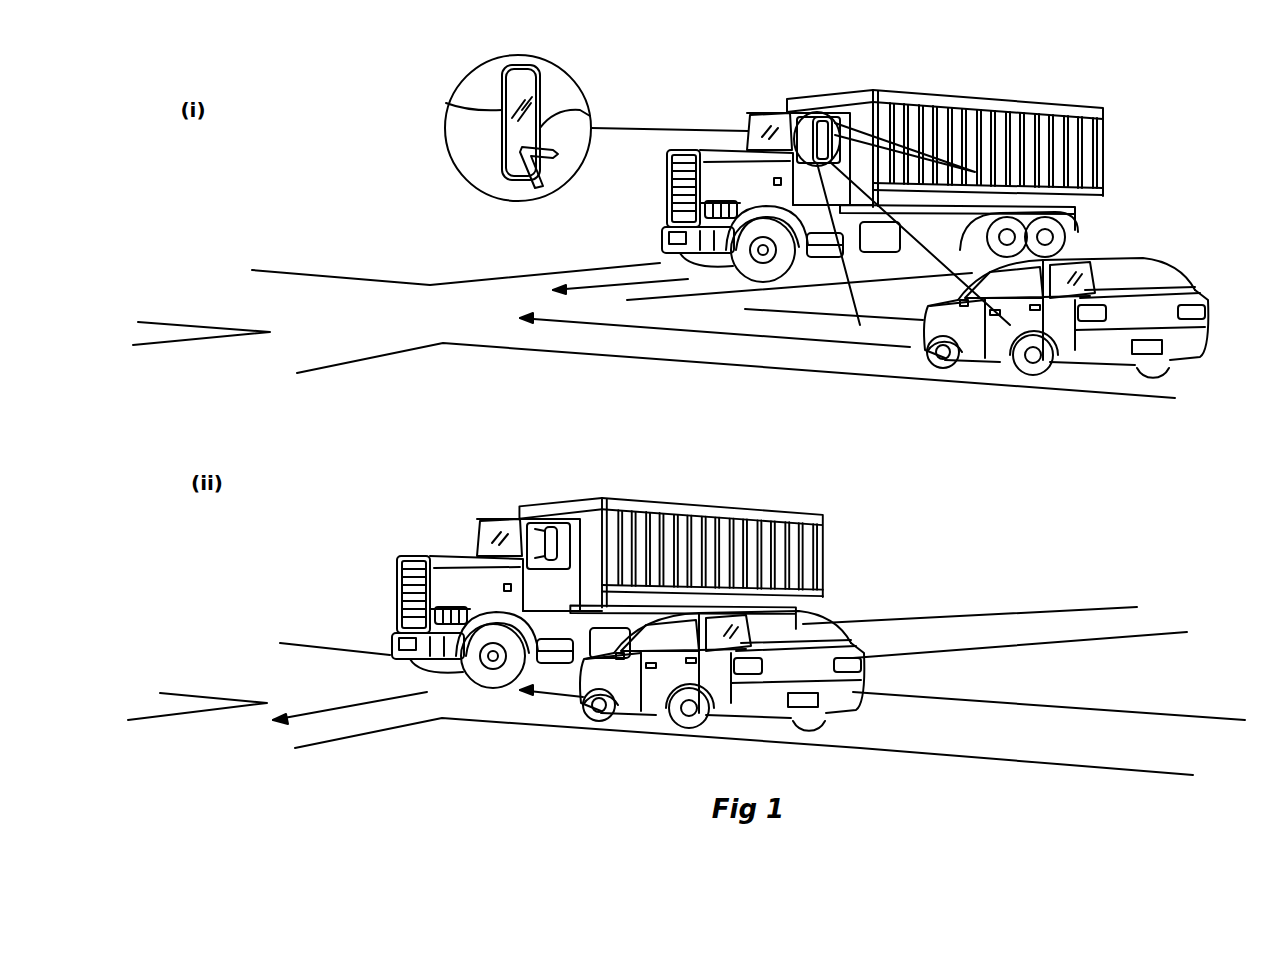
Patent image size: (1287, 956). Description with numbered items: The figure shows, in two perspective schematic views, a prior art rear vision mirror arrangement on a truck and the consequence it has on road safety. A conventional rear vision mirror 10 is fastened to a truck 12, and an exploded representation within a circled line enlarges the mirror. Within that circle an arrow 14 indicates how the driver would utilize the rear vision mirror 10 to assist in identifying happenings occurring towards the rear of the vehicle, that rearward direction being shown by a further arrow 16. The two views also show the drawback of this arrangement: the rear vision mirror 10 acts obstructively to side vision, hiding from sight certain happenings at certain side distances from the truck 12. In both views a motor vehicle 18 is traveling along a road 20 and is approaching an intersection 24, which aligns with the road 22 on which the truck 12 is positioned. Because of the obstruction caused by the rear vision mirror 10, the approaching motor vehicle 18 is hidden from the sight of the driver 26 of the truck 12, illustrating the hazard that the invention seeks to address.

The rear vision mirror 10 is at (447, 103).
The truck 12 is at (858, 94).
The arrow 14 is at (548, 142).
The arrow 16 is at (925, 106).
The motor vehicle 18 is at (1165, 263).
The road 20 is at (630, 348).
The road 22 is at (597, 275).
The intersection 24 is at (422, 327).
The driver 26 is at (783, 112).